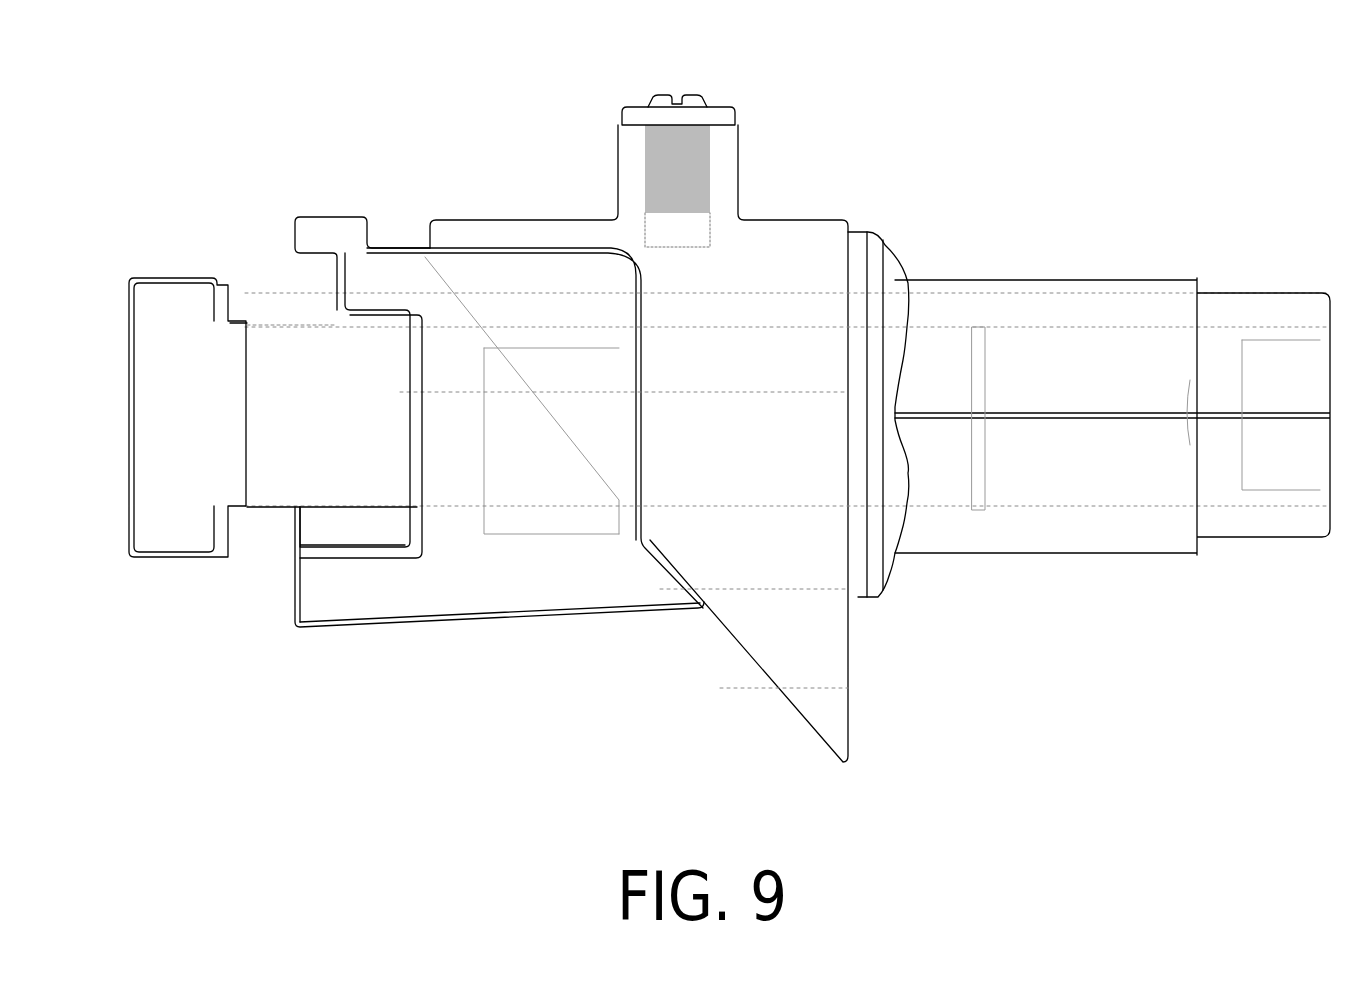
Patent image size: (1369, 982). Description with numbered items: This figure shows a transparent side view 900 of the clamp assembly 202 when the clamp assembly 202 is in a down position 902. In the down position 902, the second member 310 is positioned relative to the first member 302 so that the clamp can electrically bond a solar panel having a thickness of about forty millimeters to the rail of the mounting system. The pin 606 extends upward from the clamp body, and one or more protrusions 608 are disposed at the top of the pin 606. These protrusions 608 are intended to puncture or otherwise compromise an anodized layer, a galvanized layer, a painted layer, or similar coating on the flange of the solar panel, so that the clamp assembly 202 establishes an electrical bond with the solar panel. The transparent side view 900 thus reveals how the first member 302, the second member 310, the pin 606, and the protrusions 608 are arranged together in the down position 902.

The clamp assembly 202 is at (150, 208).
The first member 302 is at (342, 218).
The second member 310 is at (823, 218).
The pin 606 is at (640, 85).
The protrusions 608 is at (698, 97).
The transparent side view 900 is at (16, 828).
The down position 902 is at (383, 118).